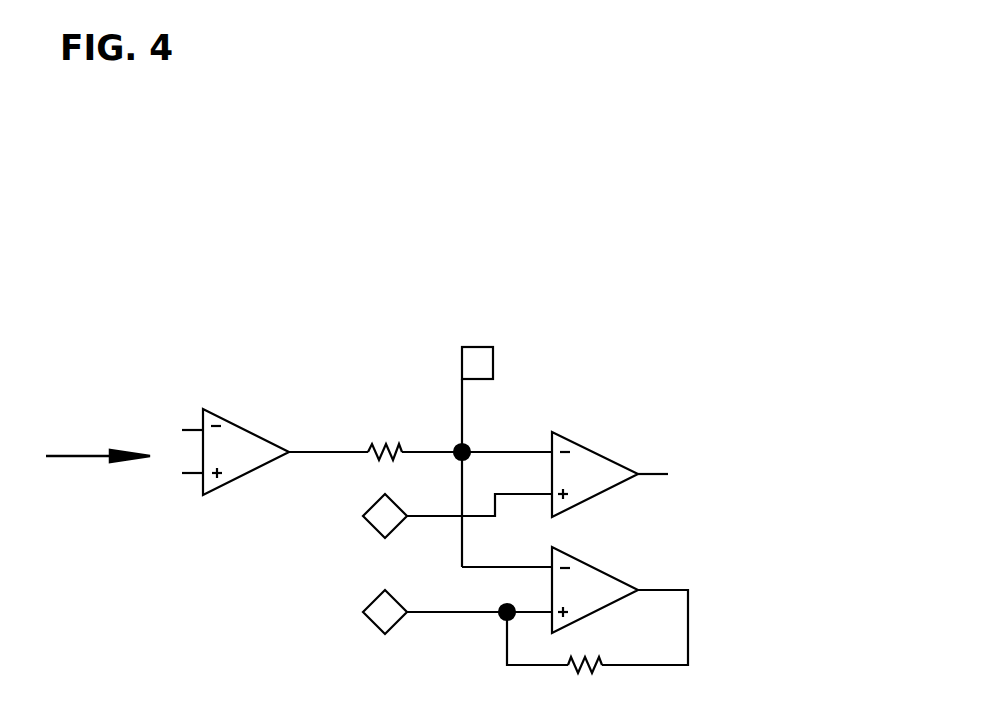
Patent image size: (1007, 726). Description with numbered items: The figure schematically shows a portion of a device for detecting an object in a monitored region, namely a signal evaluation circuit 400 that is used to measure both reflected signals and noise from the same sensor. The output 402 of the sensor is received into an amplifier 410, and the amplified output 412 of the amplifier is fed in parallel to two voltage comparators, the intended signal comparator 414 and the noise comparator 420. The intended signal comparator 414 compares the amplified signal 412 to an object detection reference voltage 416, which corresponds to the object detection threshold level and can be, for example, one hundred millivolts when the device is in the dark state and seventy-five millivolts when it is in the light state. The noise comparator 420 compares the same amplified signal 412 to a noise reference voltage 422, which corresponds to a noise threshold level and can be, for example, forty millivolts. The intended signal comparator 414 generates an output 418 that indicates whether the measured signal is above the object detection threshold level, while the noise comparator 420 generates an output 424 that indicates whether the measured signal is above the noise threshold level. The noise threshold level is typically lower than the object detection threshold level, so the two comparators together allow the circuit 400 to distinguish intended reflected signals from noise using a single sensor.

The signal evaluation circuit 400 is at (452, 268).
The output of the sensor 402 is at (98, 442).
The amplifier 410 is at (238, 425).
The output of the amplifier 412 is at (462, 415).
The intended signal comparator 414 is at (577, 440).
The object detection reference voltage 416 is at (416, 523).
The output of the intended signal comparator 418 is at (660, 487).
The noise comparator 420 is at (592, 565).
The noise reference voltage 422 is at (383, 635).
The output of the noise comparator 424 is at (775, 578).